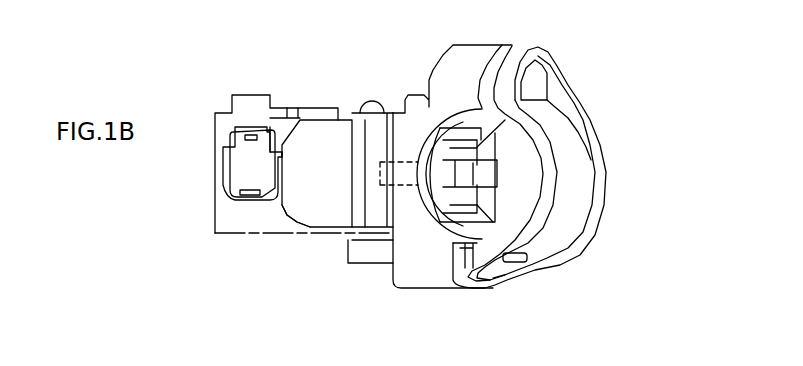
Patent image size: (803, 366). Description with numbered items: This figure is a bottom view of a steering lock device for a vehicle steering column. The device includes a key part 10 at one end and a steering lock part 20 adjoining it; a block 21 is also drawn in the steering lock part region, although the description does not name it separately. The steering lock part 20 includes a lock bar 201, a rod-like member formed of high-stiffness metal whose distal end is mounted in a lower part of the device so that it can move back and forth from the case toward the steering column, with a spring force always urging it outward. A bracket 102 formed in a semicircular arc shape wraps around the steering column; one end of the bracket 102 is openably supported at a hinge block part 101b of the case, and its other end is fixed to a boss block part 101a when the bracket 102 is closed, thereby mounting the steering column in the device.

The key part 10 is at (220, 122).
The steering lock part 20 is at (373, 130).
The guide block 21 is at (326, 130).
The boss block part 101a is at (450, 50).
The hinge block part 101b is at (422, 273).
The bracket 102 is at (583, 128).
The lock bar 201 is at (487, 180).